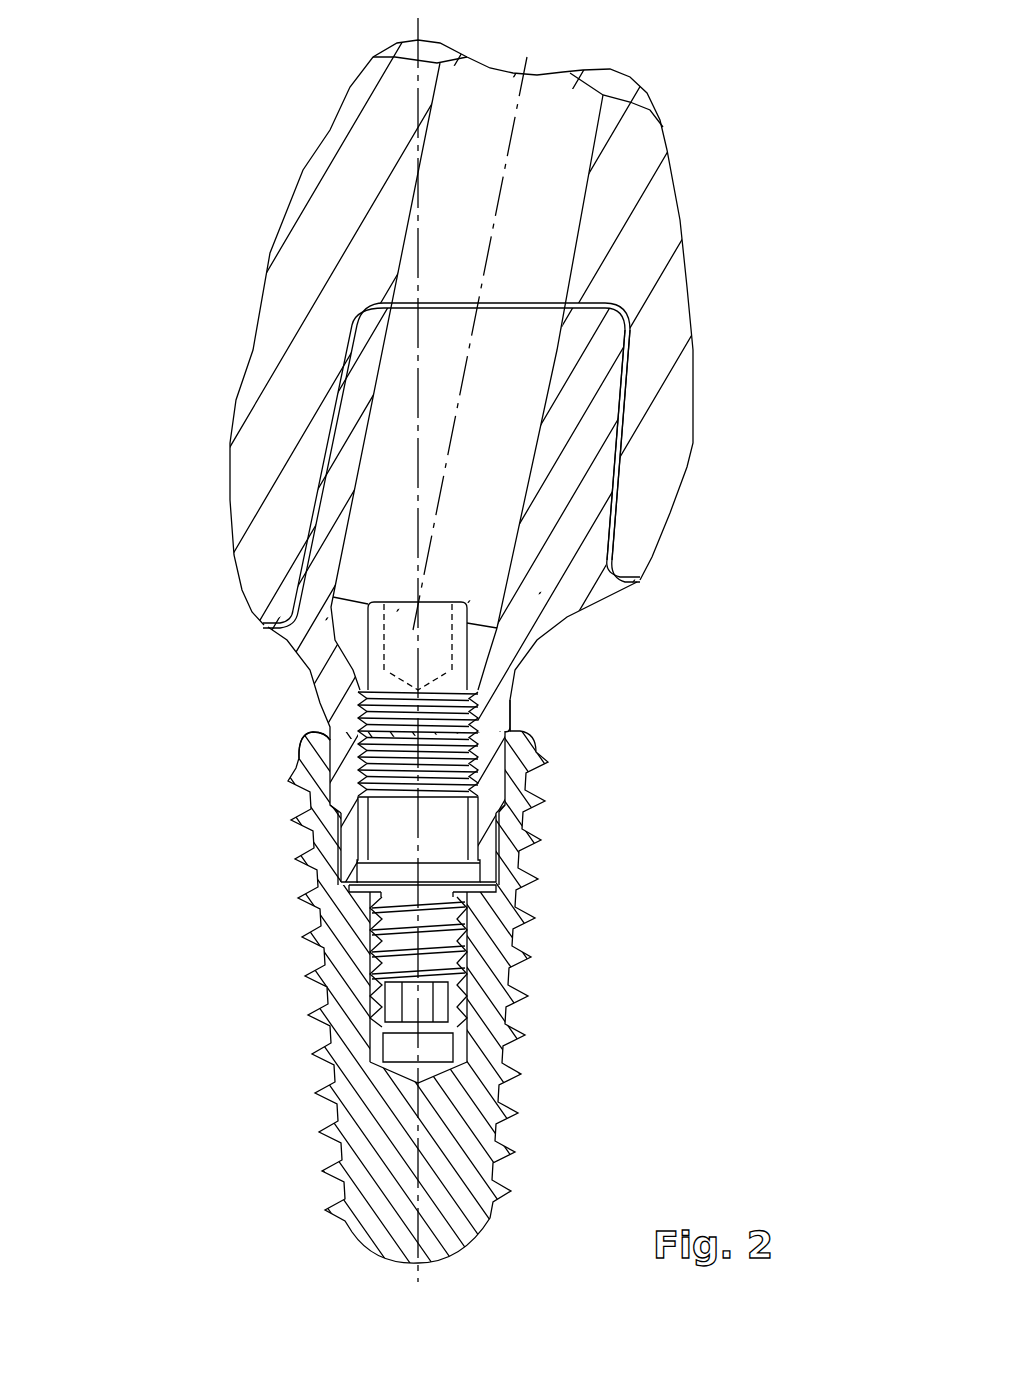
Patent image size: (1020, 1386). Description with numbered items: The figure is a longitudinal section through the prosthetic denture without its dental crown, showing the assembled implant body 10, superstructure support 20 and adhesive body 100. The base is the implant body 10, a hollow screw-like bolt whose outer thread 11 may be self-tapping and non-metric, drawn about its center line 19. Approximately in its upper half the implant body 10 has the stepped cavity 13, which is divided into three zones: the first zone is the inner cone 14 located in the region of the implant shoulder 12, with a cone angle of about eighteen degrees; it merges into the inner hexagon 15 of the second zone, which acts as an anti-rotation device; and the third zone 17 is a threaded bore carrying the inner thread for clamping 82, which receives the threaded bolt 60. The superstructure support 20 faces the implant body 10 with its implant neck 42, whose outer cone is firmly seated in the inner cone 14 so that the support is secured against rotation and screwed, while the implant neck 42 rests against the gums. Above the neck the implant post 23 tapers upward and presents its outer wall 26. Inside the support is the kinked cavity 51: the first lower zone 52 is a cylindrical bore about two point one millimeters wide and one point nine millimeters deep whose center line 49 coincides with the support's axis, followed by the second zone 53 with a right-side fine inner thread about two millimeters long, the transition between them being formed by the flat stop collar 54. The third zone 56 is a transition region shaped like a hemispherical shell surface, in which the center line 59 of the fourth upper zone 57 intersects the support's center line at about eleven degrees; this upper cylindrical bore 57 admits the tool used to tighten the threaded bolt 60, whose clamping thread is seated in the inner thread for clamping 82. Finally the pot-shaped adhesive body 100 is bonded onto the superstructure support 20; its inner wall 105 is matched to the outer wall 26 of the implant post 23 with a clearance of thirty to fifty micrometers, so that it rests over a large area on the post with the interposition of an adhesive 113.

The adhesive body 100 is at (667, 285).
The center line 59 is at (465, 373).
The inner wall 105 is at (622, 427).
The adhesive 113 is at (617, 462).
The outer wall 26 is at (615, 490).
The implant post 23 is at (612, 513).
The superstructure support 20 is at (642, 588).
The upper zone 57 is at (362, 455).
The kinked cavity 51 is at (348, 513).
The third zone 56 is at (335, 630).
The second zone 53 is at (355, 692).
The center line 49 is at (418, 645).
The implant neck 42 is at (527, 692).
The implant shoulder 12 is at (518, 730).
The inner cone 14 is at (332, 768).
The stop collar 54 is at (333, 800).
The first lower zone 52 is at (343, 835).
The inner hexagon 15 is at (340, 878).
The cavity 13 is at (330, 890).
The threaded bolt 60 is at (473, 830).
The inner thread for clamping 82 is at (372, 978).
The threaded bore 17 is at (357, 1000).
The implant body 10 is at (352, 1032).
The outer thread 11 is at (318, 1052).
The center line 19 is at (418, 1072).